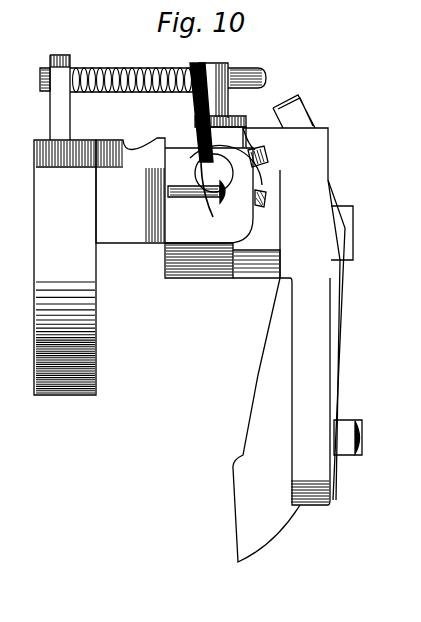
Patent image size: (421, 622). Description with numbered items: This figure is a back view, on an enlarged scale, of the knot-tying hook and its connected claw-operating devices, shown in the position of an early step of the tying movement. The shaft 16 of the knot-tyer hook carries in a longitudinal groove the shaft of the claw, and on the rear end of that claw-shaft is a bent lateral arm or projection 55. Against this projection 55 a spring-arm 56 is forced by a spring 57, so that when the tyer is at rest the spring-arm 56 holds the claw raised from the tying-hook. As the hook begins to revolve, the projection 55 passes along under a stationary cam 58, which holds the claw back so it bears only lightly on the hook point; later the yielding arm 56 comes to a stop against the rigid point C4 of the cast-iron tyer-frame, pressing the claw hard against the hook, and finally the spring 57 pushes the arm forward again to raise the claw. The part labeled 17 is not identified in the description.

The spring 57 is at (128, 68).
The rigid point of the tyer-frame C4 is at (163, 137).
The lateral arm or projection 55 is at (225, 137).
The spring-arm 56 is at (201, 149).
The shaft of the knot-tyer hook 16 is at (200, 178).
The stationary cam 58 is at (268, 152).
The pawl 17 is at (259, 208).